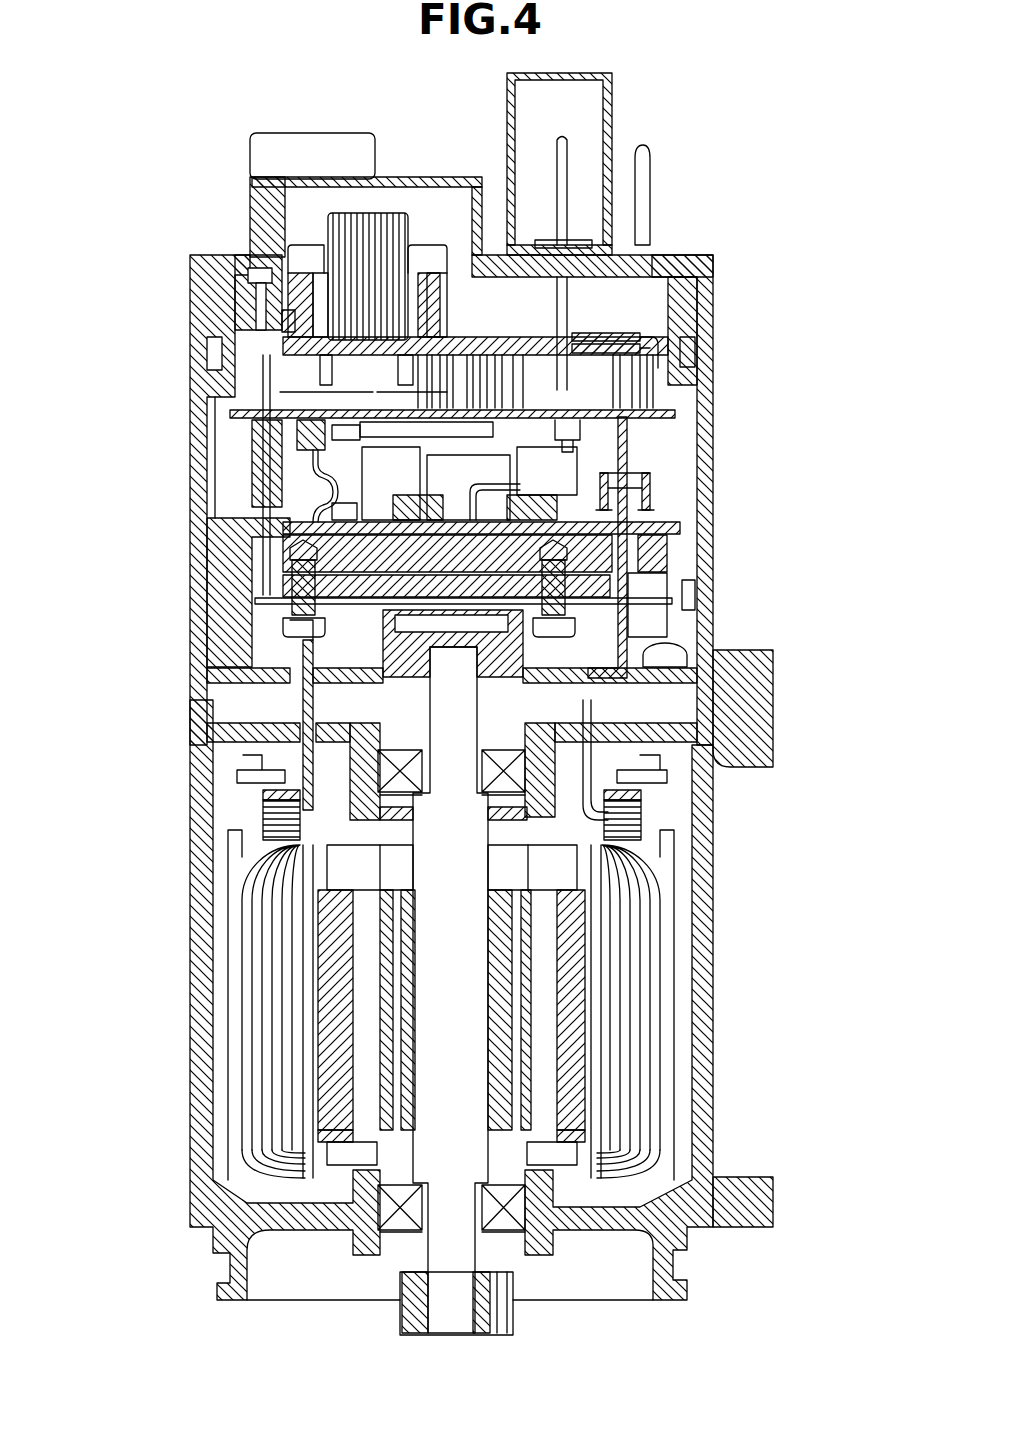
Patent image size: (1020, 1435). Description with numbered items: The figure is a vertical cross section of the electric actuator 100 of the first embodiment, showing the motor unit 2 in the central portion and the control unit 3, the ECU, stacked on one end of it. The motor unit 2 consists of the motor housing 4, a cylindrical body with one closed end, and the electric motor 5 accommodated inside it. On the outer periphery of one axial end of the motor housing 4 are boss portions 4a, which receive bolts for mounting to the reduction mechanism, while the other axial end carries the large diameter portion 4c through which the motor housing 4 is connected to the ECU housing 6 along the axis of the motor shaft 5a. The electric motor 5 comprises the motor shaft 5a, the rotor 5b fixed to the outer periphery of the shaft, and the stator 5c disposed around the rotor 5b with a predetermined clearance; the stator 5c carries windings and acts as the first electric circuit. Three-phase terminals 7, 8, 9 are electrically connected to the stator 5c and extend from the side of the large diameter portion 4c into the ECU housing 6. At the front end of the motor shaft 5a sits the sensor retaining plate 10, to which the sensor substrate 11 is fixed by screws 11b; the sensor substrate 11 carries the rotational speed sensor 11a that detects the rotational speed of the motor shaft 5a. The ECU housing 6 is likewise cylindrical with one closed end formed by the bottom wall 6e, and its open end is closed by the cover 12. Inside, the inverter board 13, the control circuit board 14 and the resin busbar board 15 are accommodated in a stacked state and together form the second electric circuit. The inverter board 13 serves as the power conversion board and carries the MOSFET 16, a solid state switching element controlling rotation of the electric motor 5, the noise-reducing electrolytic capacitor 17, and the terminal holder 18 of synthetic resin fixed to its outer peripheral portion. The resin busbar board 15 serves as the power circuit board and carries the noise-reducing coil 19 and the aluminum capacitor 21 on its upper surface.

The motor unit 2 is at (717, 908).
The control unit (ECU) 3 is at (467, 437).
The motor housing 4 is at (517, 975).
The boss portion 4a is at (768, 1202).
The large diameter portion 4c is at (755, 708).
The electric motor 5 is at (519, 967).
The motor shaft 5a is at (470, 1048).
The rotor 5b is at (567, 1002).
The stator 5c is at (640, 930).
The ECU housing 6 is at (722, 519).
The bottom wall 6e is at (290, 547).
The three-phase terminal 7 is at (611, 643).
The three-phase terminal 8 is at (611, 643).
The three-phase terminal 9 is at (560, 610).
The sensor retaining plate 10 is at (473, 600).
The sensor substrate 11 is at (687, 657).
The rotational speed sensor 11a is at (428, 568).
The screw 11b is at (567, 607).
The cover 12 is at (258, 206).
The inverter board 13 is at (590, 533).
The control circuit board 14 is at (672, 414).
The resin busbar board 15 is at (627, 327).
The MOSFET 16 is at (682, 523).
The electrolytic capacitor 17 is at (560, 465).
The terminal holder 18 is at (655, 498).
The coil 19 is at (388, 213).
The aluminum capacitor 21 is at (520, 290).
The electric actuator 100 is at (529, 951).